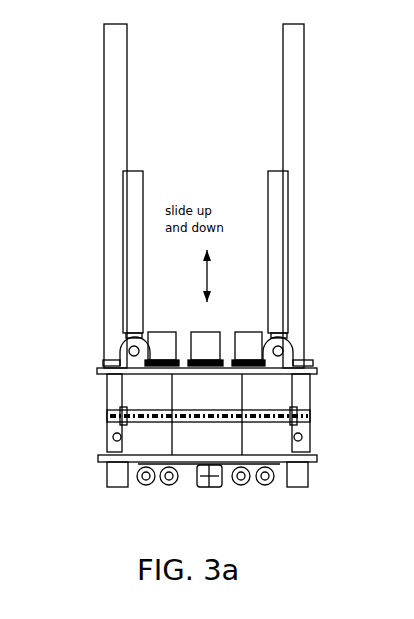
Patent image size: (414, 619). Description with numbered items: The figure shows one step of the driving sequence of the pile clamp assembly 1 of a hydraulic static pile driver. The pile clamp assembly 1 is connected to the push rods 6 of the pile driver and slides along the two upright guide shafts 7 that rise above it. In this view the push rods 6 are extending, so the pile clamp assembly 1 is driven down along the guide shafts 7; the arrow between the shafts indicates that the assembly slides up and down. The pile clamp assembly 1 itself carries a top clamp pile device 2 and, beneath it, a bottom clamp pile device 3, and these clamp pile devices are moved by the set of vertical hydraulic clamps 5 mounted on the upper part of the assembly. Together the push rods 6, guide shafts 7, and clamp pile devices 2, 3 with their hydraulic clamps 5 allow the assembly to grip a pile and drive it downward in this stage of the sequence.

The pile clamp assembly 1 is at (315, 422).
The top clamp pile device 2 is at (130, 386).
The bottom clamp pile device 3 is at (132, 432).
The vertical hydraulic clamps 5 is at (258, 332).
The push rod 6 is at (277, 209).
The guide shaft 7 is at (289, 86).